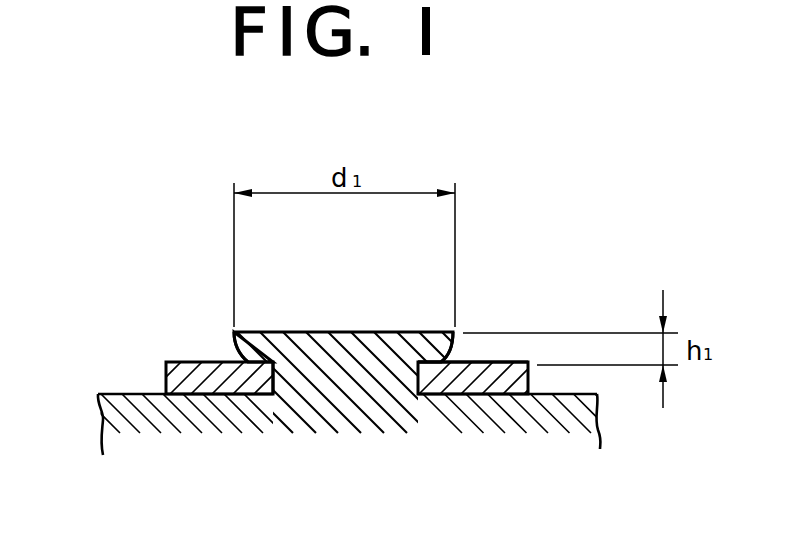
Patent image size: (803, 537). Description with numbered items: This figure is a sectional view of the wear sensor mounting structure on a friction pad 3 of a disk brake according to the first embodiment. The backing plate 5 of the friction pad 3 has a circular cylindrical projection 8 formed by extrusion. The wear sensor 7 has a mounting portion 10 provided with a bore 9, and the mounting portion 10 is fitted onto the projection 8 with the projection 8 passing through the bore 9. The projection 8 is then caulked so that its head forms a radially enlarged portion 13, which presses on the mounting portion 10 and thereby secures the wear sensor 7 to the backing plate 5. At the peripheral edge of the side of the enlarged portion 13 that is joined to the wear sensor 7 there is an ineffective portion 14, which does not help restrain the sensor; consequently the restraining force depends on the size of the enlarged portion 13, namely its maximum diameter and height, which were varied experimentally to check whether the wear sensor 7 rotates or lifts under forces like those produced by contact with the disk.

The friction pad 3 is at (101, 418).
The backing plate 5 is at (162, 413).
The wear sensor 7 is at (512, 383).
The projection 8 is at (352, 336).
The bore 9 is at (274, 390).
The mounting portion 10 is at (500, 373).
The enlarged portion 13 is at (262, 336).
The ineffective portion 14 is at (455, 357).